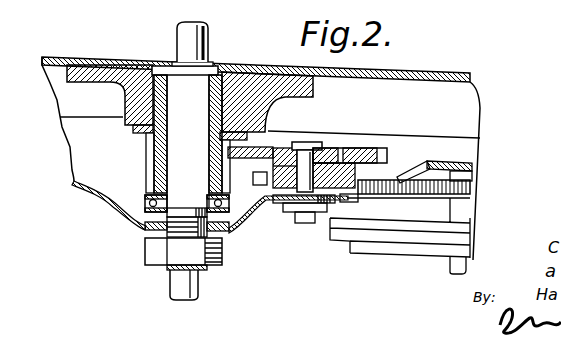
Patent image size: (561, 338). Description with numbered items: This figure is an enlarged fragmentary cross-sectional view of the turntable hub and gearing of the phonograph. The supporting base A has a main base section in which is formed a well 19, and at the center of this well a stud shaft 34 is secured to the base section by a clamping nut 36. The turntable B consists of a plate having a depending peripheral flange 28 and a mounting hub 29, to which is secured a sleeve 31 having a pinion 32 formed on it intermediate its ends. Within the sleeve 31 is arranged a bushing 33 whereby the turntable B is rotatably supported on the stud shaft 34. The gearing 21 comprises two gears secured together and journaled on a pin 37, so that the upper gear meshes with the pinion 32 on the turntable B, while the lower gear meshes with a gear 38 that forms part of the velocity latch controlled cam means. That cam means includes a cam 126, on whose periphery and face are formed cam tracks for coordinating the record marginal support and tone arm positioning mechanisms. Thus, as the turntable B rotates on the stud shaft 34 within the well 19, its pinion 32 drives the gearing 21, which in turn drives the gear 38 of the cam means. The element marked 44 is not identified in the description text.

The supporting base A is at (76, 172).
The turntable B is at (467, 111).
The well 19 is at (118, 208).
The gearing 21 is at (348, 146).
The depending peripheral flange 28 is at (464, 127).
The mounting hub 29 is at (133, 105).
The sleeve 31 is at (233, 73).
The pinion 32 is at (148, 152).
The bushing 33 is at (170, 87).
The stud shaft 34 is at (176, 177).
The clamping nut 36 is at (222, 254).
The pin 37 is at (293, 150).
The gear 38 is at (467, 189).
The pin 44 is at (185, 40).
The cam 126 is at (345, 233).